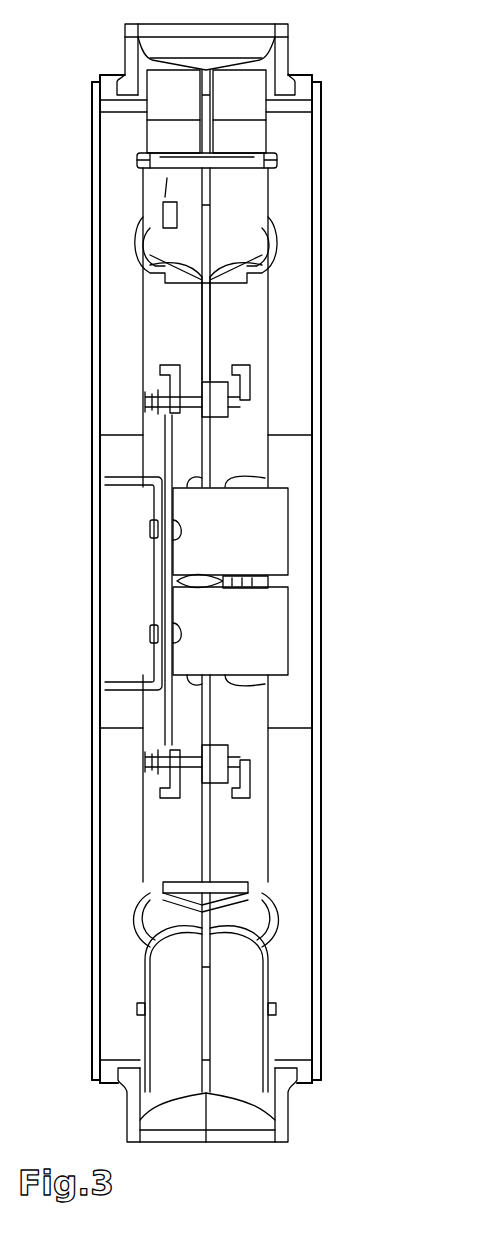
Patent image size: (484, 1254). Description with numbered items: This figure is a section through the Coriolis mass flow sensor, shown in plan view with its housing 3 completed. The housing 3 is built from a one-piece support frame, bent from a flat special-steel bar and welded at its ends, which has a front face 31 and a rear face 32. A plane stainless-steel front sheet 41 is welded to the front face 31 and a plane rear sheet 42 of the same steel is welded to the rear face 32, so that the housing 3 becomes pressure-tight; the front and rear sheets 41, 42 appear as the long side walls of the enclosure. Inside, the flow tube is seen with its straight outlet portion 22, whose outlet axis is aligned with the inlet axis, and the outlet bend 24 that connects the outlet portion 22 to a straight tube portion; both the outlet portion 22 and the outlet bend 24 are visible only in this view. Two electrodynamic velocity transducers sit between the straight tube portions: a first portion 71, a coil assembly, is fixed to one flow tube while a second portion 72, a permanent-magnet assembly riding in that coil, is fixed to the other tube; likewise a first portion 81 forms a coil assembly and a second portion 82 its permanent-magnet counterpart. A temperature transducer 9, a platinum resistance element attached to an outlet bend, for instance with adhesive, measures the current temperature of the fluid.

The housing 3 is at (97, 472).
The temperature transducer 9 is at (150, 227).
The outlet portion 22 is at (153, 133).
The outlet bend 24 is at (153, 188).
The front face 31 is at (321, 1075).
The rear face 32 is at (92, 1080).
The front sheet 41 is at (321, 950).
The rear sheet 42 is at (92, 962).
The first portion of velocity or displacement transducer 71 is at (216, 773).
The second portion of velocity or displacement transducer 72 is at (162, 786).
The first portion of velocity or displacement transducer 81 is at (214, 403).
The second portion of velocity or displacement transducer 82 is at (160, 375).